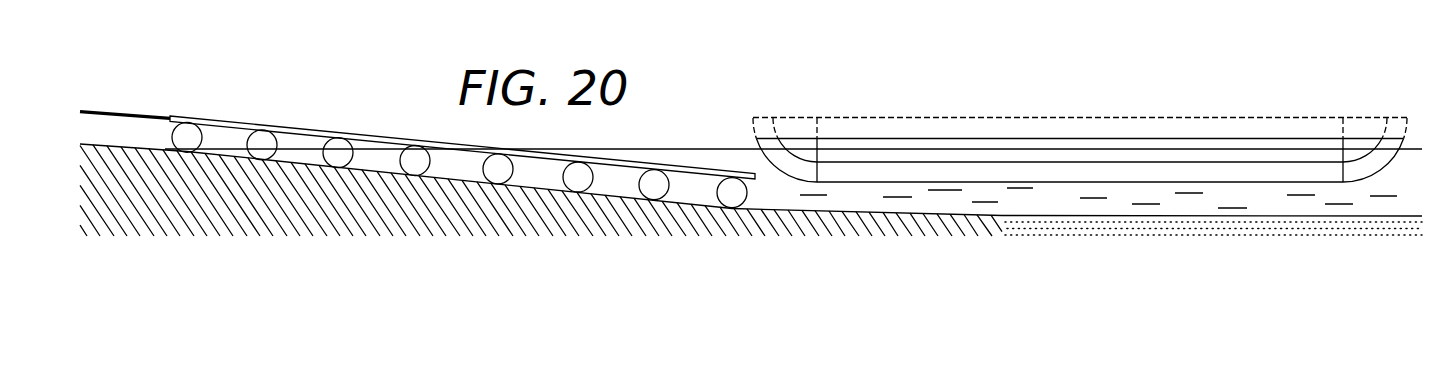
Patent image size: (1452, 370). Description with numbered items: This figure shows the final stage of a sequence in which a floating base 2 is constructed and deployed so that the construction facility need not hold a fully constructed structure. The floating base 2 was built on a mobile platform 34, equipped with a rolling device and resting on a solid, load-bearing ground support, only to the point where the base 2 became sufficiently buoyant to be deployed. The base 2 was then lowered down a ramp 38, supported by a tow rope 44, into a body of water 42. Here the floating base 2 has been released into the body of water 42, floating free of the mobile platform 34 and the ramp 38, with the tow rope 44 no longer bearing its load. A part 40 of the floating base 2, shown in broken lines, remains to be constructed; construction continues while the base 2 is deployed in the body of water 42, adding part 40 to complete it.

The floating base 2 is at (1378, 172).
The mobile platform 34 is at (212, 117).
The ramp 38 is at (740, 237).
The part of the floating base 40 is at (743, 116).
The body of water 42 is at (1069, 210).
The tow rope 44 is at (121, 111).